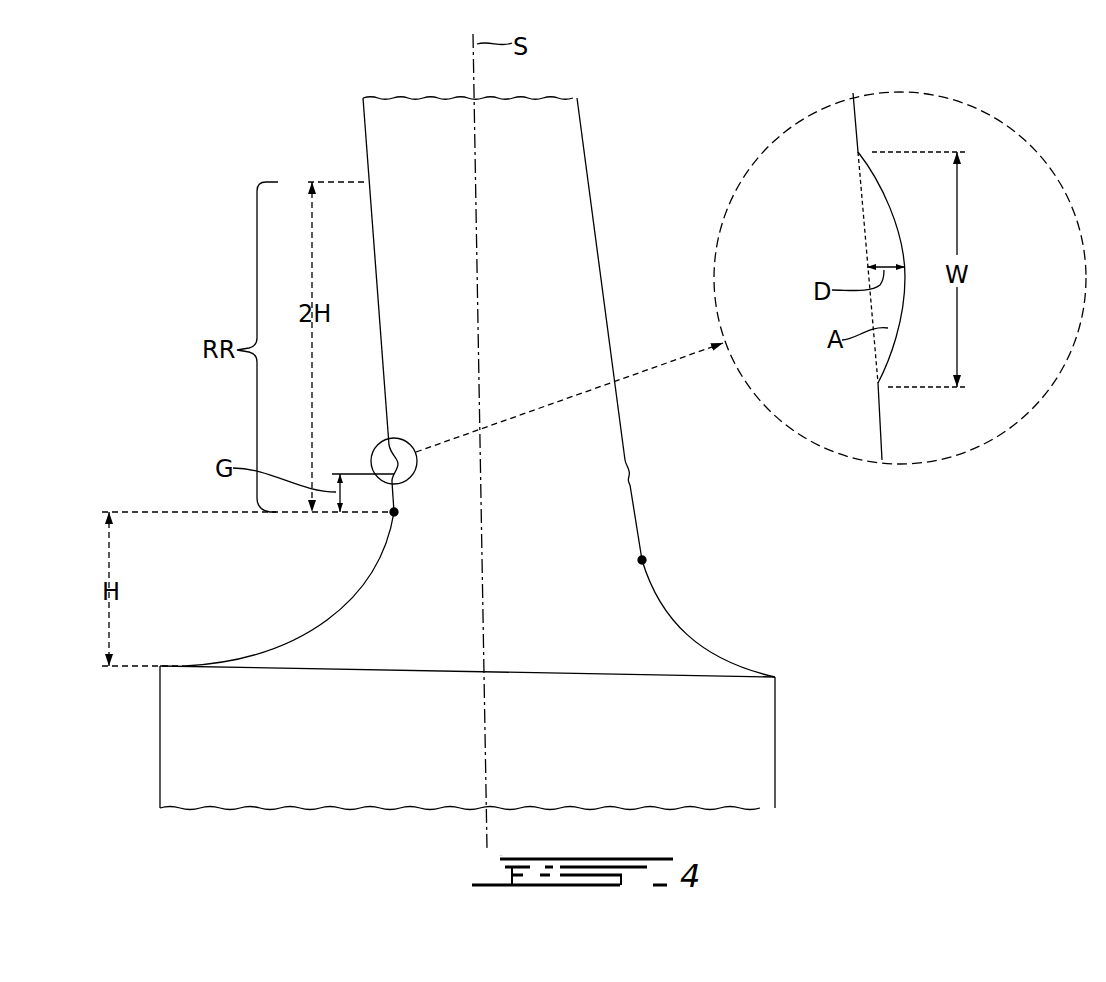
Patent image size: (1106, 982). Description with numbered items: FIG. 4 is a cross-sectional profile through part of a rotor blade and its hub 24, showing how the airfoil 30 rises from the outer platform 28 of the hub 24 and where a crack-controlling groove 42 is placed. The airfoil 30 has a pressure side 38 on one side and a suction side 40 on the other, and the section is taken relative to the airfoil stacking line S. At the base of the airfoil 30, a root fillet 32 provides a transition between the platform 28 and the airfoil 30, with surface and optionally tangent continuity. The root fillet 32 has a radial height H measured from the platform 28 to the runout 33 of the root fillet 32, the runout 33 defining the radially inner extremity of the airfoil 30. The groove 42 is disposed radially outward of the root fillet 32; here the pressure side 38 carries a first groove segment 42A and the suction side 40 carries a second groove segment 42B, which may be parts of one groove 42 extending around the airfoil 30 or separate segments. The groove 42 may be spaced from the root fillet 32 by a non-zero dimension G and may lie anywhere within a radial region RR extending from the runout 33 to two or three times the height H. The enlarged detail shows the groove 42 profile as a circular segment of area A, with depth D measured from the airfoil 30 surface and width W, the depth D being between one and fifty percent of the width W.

The hub 24 is at (752, 748).
The outer platform 28 is at (165, 666).
The airfoil 30 is at (461, 328).
The root fillet 32 is at (323, 620).
The runout 33 is at (394, 512).
The pressure side 38 is at (363, 173).
The suction side 40 is at (598, 210).
The groove 42 is at (461, 461).
The first groove segment 42A is at (397, 462).
The second groove segment 42B is at (628, 475).